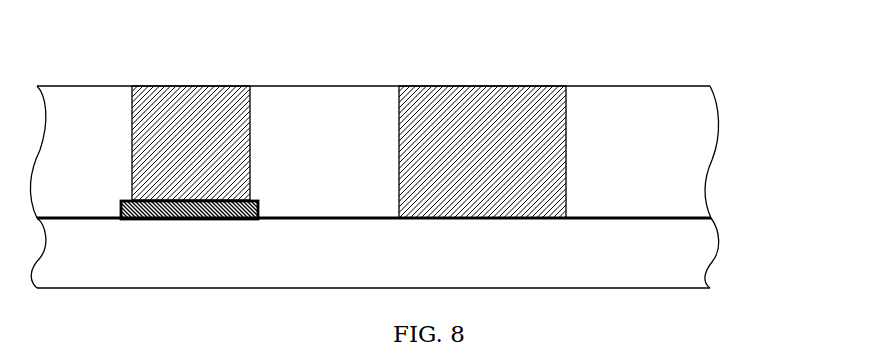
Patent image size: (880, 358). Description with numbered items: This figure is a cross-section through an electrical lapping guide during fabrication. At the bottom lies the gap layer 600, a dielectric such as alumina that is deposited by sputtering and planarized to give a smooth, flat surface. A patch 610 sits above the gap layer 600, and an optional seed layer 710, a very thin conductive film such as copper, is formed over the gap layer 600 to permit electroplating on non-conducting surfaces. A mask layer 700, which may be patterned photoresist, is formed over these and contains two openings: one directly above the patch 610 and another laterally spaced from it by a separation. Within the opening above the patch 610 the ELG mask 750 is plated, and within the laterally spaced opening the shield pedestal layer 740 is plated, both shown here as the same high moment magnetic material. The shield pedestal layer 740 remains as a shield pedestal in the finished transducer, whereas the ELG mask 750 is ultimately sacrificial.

The gap layer 600 is at (704, 261).
The patch 610 is at (258, 210).
The mask layer 700 is at (713, 152).
The seed layer 710 is at (710, 216).
The shield pedestal layer 740 is at (483, 86).
The ELG mask 750 is at (181, 86).